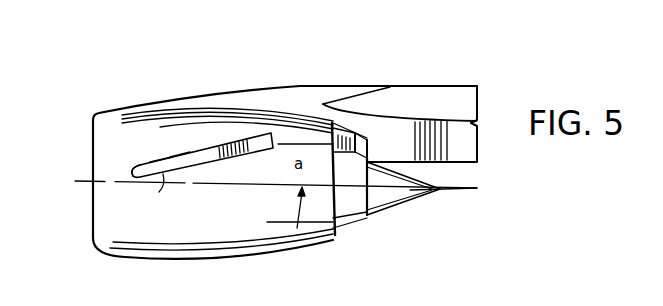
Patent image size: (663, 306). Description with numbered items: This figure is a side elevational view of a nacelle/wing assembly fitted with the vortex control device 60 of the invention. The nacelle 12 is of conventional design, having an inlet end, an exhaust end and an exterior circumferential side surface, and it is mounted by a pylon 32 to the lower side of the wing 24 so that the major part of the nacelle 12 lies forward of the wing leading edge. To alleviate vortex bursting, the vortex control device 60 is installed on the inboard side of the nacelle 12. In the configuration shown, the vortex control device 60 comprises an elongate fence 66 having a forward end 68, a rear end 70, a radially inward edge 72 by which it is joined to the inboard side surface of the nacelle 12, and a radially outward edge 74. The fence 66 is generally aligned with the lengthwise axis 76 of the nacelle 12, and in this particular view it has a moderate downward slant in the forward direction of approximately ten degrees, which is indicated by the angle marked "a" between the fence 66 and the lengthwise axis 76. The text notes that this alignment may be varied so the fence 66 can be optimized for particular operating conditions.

The nacelle 12 is at (112, 261).
The wing 24 is at (450, 86).
The pylon 32 is at (278, 91).
The vortex control device 60 is at (187, 141).
The elongate fence 66 is at (179, 155).
The forward end 68 is at (133, 174).
The rear end 70 is at (273, 142).
The radially inward edge 72 is at (162, 176).
The radially outward edge 74 is at (165, 160).
The lengthwise axis 76 is at (86, 184).